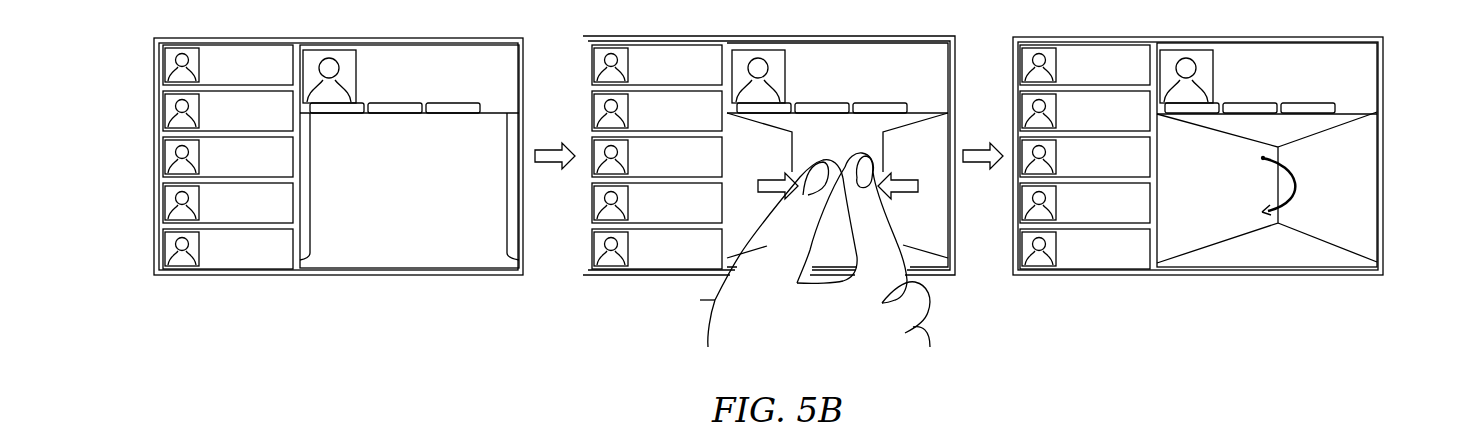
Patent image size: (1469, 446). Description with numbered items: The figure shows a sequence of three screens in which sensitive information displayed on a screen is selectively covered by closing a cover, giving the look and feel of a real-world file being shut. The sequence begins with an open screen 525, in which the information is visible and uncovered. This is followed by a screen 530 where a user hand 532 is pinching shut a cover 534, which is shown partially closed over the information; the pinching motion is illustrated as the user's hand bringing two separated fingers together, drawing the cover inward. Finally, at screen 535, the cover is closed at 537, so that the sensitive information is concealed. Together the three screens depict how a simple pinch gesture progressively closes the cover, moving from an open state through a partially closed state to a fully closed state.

The open screen 525 is at (340, 37).
The screen 530 is at (768, 36).
The user hand 532 is at (717, 300).
The cover 534 is at (937, 192).
The screen 535 is at (1198, 37).
The closed cover 537 is at (1365, 192).